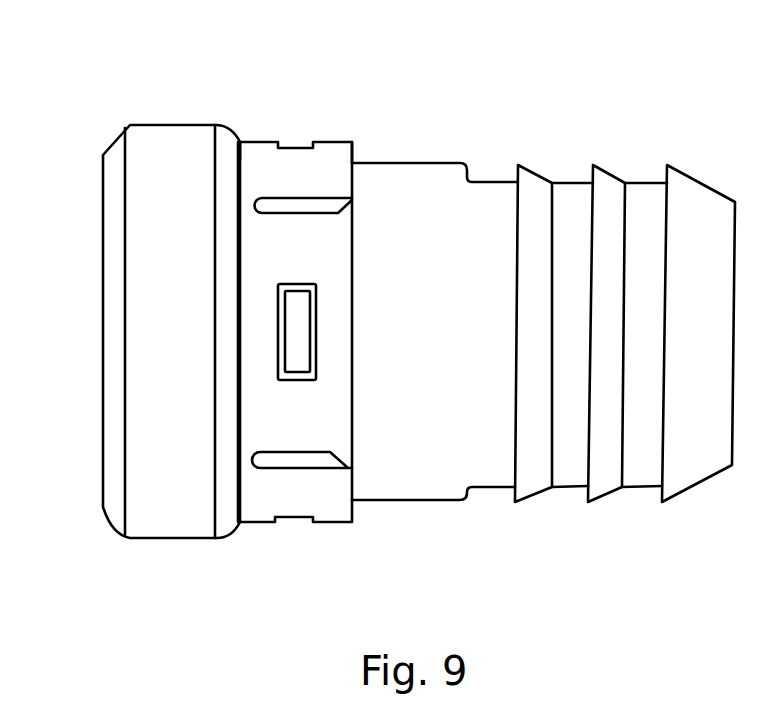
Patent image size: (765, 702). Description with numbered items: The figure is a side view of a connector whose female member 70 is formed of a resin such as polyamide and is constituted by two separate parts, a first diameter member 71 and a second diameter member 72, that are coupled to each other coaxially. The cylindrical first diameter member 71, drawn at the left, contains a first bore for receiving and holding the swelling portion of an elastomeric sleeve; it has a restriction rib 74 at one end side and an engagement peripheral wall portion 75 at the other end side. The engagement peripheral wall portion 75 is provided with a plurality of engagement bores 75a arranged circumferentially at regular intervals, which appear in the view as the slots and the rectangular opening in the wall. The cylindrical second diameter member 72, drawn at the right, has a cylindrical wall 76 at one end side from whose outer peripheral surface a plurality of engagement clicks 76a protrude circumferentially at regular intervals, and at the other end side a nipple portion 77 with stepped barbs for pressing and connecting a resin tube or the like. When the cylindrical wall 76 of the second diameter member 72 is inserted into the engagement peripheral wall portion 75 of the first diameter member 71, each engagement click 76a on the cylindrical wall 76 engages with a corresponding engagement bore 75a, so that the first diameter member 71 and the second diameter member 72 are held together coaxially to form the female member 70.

The female member 70 is at (360, 138).
The first diameter member 71 is at (243, 128).
The second diameter member 72 is at (478, 172).
The restriction rib 74 is at (103, 495).
The engagement peripheral wall portion 75 is at (330, 237).
The engagement bore 75a is at (292, 145).
The cylindrical wall 76 is at (392, 485).
The engagement click 76a is at (290, 310).
The nipple portion 77 is at (644, 212).